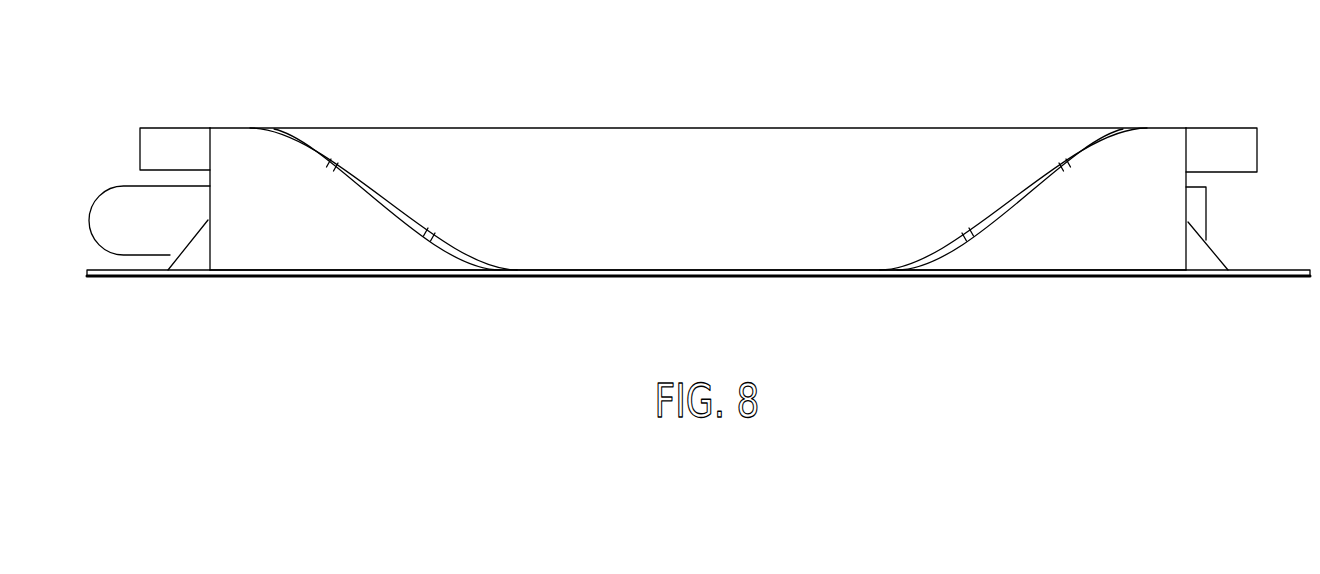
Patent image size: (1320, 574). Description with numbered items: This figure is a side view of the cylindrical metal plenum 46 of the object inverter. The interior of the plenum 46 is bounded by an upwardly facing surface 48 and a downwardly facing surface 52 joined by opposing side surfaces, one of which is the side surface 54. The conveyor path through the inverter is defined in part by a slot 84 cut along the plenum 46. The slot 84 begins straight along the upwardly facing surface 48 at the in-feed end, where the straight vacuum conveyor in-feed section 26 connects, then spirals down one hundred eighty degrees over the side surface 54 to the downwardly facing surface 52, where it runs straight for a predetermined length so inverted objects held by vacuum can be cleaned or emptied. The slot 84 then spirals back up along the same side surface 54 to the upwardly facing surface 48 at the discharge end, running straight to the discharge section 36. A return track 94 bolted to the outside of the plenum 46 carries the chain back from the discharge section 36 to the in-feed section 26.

The in-feed section 26 is at (1213, 138).
The discharge section 36 is at (182, 140).
The plenum 46 is at (698, 208).
The upwardly facing surface 48 is at (417, 136).
The downwardly facing surface 52 is at (438, 260).
The side surface 54 is at (672, 203).
The slot 84 is at (397, 200).
The return track 94 is at (142, 283).